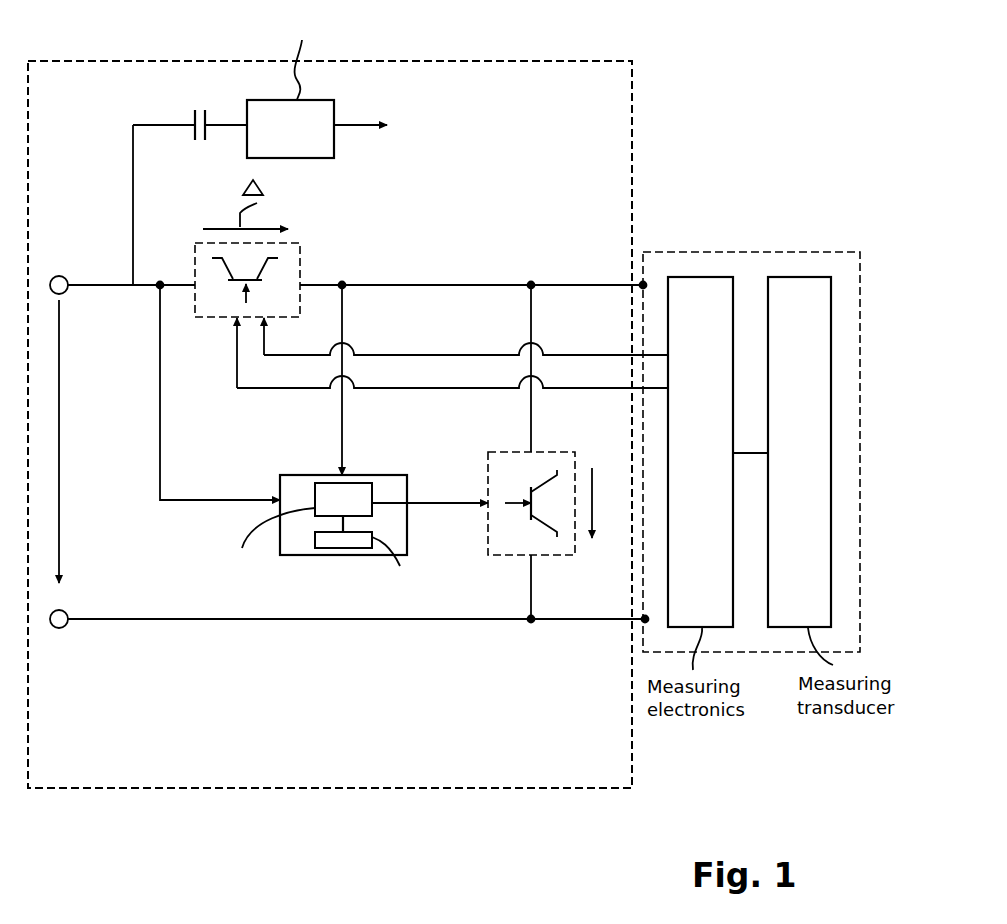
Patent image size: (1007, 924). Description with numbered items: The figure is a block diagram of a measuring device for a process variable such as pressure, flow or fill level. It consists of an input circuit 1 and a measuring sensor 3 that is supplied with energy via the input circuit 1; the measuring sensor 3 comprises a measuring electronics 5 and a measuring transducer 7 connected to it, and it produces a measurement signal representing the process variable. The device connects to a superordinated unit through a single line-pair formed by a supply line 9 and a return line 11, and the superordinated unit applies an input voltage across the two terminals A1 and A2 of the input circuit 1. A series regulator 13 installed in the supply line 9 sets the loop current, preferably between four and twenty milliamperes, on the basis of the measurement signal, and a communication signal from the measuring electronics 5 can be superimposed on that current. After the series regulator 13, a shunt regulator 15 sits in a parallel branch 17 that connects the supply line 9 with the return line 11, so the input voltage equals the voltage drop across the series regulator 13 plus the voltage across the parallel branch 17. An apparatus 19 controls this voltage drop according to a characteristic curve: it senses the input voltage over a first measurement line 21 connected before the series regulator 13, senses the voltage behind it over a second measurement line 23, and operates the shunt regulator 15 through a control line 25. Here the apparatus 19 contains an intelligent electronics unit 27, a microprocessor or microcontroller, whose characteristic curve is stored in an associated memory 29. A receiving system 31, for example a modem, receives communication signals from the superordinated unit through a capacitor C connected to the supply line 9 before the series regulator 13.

The input circuit 1 is at (430, 790).
The measuring sensor 3 is at (744, 252).
The measuring electronics 5 is at (718, 452).
The measuring transducer 7 is at (799, 452).
The supply line 9 is at (110, 284).
The return line 11 is at (240, 620).
The series regulator 13 is at (218, 319).
The shunt regulator 15 is at (510, 556).
The parallel branch 17 is at (531, 317).
The apparatus for controlling the voltage drop 19 is at (303, 556).
The first measurement line 21 is at (212, 501).
The second measurement line 23 is at (342, 432).
The control line 25 is at (448, 504).
The intelligent electronics unit 27 is at (343, 499).
The memory 29 is at (358, 549).
The receiving system 31 is at (312, 88).
The terminal A1 is at (59, 276).
The terminal A2 is at (59, 628).
The capacitor C is at (193, 121).